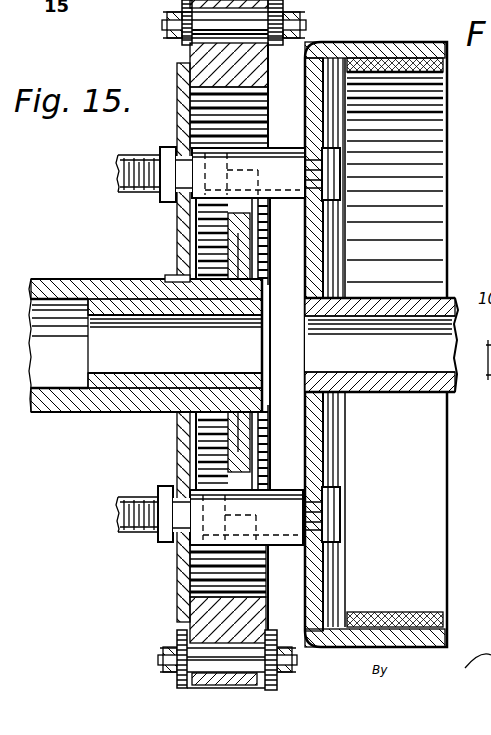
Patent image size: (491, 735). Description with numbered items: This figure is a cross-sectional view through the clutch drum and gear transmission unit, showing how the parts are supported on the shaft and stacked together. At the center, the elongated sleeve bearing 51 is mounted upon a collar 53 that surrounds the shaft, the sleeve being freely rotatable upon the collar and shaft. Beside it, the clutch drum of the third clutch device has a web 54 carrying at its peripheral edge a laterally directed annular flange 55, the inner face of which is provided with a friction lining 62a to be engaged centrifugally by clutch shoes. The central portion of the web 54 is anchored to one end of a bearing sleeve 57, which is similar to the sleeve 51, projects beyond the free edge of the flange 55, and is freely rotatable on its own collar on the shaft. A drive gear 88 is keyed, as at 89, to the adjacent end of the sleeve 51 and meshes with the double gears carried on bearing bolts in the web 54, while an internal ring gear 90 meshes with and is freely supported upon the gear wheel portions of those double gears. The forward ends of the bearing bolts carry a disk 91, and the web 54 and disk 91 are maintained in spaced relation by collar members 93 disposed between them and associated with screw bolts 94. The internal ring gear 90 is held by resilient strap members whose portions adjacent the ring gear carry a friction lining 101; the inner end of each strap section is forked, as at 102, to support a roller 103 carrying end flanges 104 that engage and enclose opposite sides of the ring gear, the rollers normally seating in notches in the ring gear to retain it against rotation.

The sleeve bearing 51 is at (113, 290).
The collar 53 is at (185, 310).
The web 54 is at (308, 112).
The annular flange 55 is at (405, 47).
The bearing sleeve 57 is at (396, 310).
The friction lining 62a is at (425, 88).
The drive gear 88 is at (238, 450).
The key 89 is at (264, 274).
The internal ring gear 90 is at (208, 64).
The disk 91 is at (178, 115).
The collar members 93 is at (290, 182).
The screw bolts 94 is at (333, 508).
The friction lining 101 is at (178, 632).
The forked inner end 102 is at (296, 36).
The roller 103 is at (253, 30).
The end flanges 104 is at (273, 635).